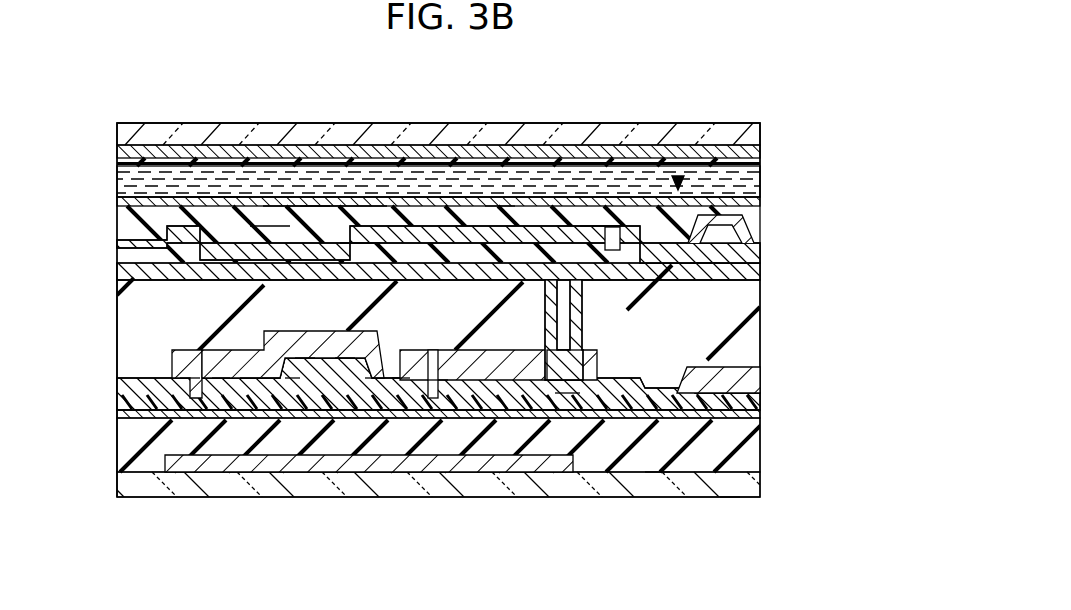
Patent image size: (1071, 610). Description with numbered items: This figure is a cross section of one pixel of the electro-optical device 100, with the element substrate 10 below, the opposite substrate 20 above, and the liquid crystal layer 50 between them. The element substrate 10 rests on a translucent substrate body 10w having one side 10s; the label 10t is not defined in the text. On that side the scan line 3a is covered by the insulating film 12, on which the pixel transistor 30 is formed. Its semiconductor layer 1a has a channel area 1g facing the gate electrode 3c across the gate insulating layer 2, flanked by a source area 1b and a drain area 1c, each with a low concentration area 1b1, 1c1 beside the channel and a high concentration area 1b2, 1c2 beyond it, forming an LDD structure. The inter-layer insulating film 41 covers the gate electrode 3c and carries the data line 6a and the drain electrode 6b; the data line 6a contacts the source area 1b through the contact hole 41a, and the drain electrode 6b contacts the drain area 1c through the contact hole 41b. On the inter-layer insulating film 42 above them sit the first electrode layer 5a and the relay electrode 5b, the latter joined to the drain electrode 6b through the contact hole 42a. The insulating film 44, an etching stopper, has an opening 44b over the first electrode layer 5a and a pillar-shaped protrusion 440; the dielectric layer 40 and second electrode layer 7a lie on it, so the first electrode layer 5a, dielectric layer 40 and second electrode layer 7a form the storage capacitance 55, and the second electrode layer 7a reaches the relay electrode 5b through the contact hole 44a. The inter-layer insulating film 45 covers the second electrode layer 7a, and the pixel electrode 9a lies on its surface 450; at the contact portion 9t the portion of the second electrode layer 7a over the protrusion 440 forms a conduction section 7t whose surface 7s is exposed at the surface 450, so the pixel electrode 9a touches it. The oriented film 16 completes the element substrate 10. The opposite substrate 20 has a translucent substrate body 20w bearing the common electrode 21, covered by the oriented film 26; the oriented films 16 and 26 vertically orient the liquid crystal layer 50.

The electro-optical device 100 is at (750, 68).
The opposite substrate 20 is at (840, 114).
The substrate body 20w is at (764, 132).
The common electrode 21 is at (762, 150).
The oriented film 26 is at (760, 168).
The pixel electrode 9a is at (128, 196).
The inter-layer insulating film 45 is at (211, 178).
The insulating film 44 is at (758, 252).
The pillar-shaped protrusion 440 is at (760, 278).
The contact hole 44a is at (610, 227).
The opening 44b is at (343, 280).
The inter-layer insulating film 42 is at (760, 340).
The contact hole 42a is at (565, 410).
The inter-layer insulating film 41 is at (760, 400).
The contact hole 41a is at (190, 372).
The contact hole 41b is at (433, 350).
The gate insulating layer 2 is at (760, 414).
The insulating film 12 is at (760, 450).
The element substrate 10 is at (97, 187).
The substrate body 10w is at (760, 485).
The one side of the substrate body 10s is at (655, 485).
The second surface of substrate 10t is at (730, 497).
The semiconductor layer 1a is at (190, 400).
The source area 1b is at (222, 400).
The low concentration area 1b1 is at (290, 405).
The high concentration area 1b2 is at (270, 400).
The drain area 1c is at (400, 405).
The low concentration area 1c1 is at (370, 405).
The high concentration area 1c2 is at (435, 410).
The channel area 1g is at (345, 405).
The pixel transistor 30 is at (330, 434).
The scan line 3a is at (500, 475).
The gate electrode 3c is at (300, 405).
The data line 6a is at (745, 380).
The drain electrode 6b is at (555, 380).
The first electrode layer 5a is at (269, 226).
The relay electrode 5b is at (617, 281).
The storage capacitance 55 is at (263, 72).
The dielectric layer 40 is at (315, 215).
The second electrode layer 7a is at (357, 243).
The oriented film 16 is at (455, 185).
The surface of the inter-layer insulating film 450 is at (498, 200).
The liquid crystal layer 50 is at (597, 235).
The contact portion 9t is at (678, 175).
The conduction section 7t is at (700, 212).
The surface of the conduction section 7s is at (732, 212).